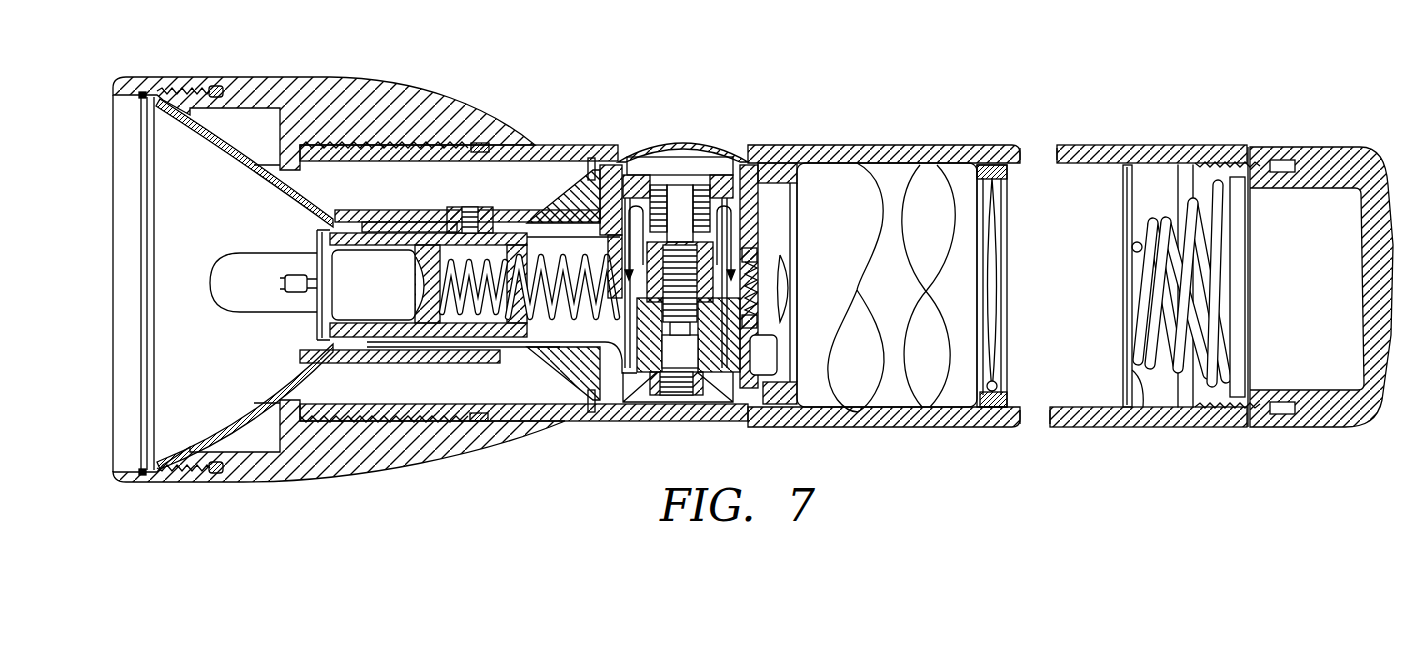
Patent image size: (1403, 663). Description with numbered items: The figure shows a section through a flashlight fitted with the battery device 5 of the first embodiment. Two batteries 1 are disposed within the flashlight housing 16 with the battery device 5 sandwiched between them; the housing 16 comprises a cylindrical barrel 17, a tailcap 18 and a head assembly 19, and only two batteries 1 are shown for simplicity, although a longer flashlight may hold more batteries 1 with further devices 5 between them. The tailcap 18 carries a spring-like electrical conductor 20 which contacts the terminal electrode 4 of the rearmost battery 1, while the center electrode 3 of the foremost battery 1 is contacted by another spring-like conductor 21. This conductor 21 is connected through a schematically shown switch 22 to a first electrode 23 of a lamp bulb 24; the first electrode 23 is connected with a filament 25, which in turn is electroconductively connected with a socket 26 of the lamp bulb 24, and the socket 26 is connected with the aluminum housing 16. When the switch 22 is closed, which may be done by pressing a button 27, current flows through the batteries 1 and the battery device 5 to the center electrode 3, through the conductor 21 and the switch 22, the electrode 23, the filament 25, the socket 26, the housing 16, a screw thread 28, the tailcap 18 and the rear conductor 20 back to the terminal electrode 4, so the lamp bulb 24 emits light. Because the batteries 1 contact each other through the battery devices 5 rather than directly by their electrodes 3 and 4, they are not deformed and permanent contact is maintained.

The battery 1 is at (1093, 207).
The center electrode 3 is at (792, 312).
The terminal electrode 4 is at (1130, 383).
The battery device 5 is at (1000, 125).
The flashlight housing 16 is at (606, 132).
The cylindrical barrel 17 is at (902, 152).
The tailcap 18 is at (1352, 157).
The head assembly 19 is at (406, 102).
The spring-like electrical conductor 20 is at (1168, 221).
The spring-like conductor 21 is at (790, 268).
The switch 22 is at (679, 195).
The first electrode 23 is at (433, 318).
The lamp bulb 24 is at (250, 336).
The filament 25 is at (232, 289).
The socket 26 is at (357, 330).
The button 27 is at (714, 143).
The screw thread 28 is at (1250, 170).